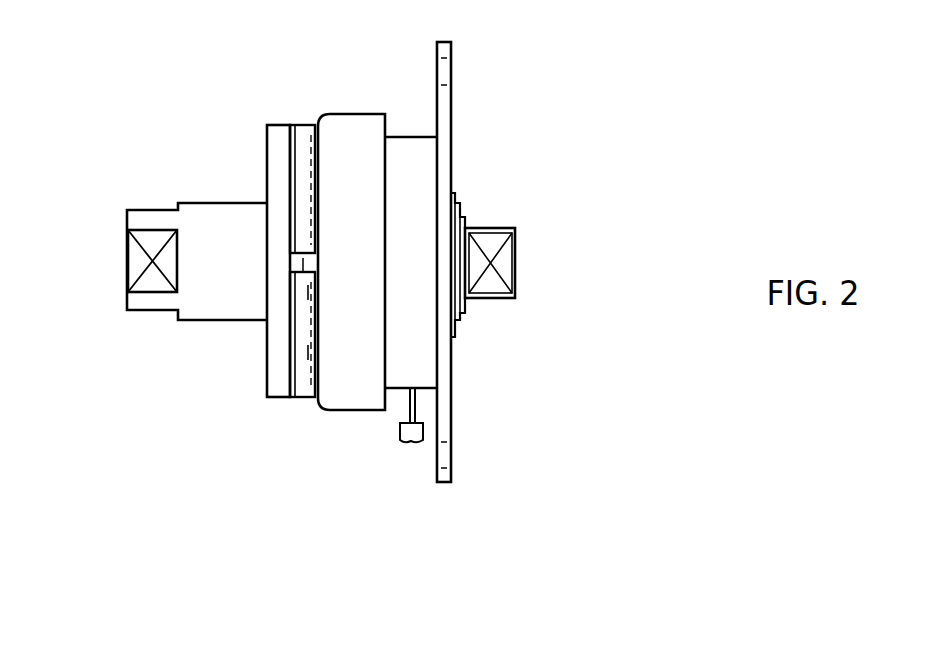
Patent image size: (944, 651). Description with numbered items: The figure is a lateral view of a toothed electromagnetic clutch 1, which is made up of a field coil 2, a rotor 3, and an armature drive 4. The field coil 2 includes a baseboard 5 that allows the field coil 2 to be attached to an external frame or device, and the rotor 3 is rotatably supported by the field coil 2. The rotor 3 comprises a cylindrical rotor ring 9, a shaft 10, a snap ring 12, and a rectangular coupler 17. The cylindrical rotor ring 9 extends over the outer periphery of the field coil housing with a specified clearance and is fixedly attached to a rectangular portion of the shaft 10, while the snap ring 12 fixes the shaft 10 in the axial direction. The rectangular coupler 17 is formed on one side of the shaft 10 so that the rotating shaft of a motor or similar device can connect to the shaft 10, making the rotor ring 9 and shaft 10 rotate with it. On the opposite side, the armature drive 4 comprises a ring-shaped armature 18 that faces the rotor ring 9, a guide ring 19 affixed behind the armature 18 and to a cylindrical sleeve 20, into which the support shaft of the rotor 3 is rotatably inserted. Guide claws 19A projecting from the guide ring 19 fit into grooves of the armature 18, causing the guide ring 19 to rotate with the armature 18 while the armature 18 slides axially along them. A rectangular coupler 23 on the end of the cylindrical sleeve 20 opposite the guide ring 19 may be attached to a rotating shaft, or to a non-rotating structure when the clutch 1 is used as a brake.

The toothed electromagnetic clutch 1 is at (315, 85).
The field coil 2 is at (413, 135).
The rotor 3 is at (348, 412).
The armature drive 4 is at (200, 203).
The baseboard 5 is at (447, 110).
The cylindrical rotor ring 9 is at (340, 130).
The shaft 10 is at (467, 227).
The snap ring 12 is at (465, 320).
The rectangular coupler 17 is at (507, 268).
The ring-shaped armature 18 is at (303, 397).
The guide ring 19 is at (262, 128).
The guide claws 19A is at (303, 285).
The cylindrical sleeve 20 is at (218, 305).
The rectangular coupler 23 is at (133, 268).